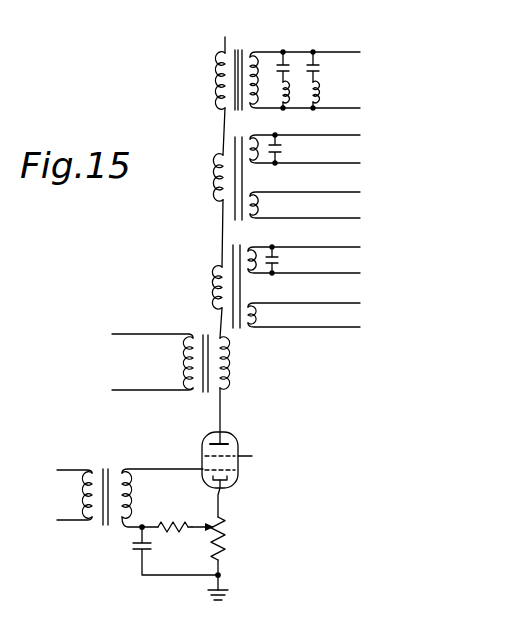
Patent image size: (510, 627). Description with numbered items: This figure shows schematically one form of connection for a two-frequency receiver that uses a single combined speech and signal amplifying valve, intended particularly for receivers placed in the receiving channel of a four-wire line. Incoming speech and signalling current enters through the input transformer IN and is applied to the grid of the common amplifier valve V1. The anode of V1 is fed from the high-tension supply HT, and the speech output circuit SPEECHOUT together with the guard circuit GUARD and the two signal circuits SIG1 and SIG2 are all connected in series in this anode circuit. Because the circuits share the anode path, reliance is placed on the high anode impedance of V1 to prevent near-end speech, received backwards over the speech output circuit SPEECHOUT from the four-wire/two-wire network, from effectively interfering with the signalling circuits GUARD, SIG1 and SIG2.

The common amplifier valve V1 is at (221, 471).
The HT+ high-tension supply line HT is at (232, 35).
The guard circuit GUARD is at (322, 80).
The signal circuit SIG1 is at (322, 176).
The signal circuit SIG2 is at (323, 286).
The speech output circuit SPEECHOUT is at (143, 363).
The input transformer IN is at (127, 498).